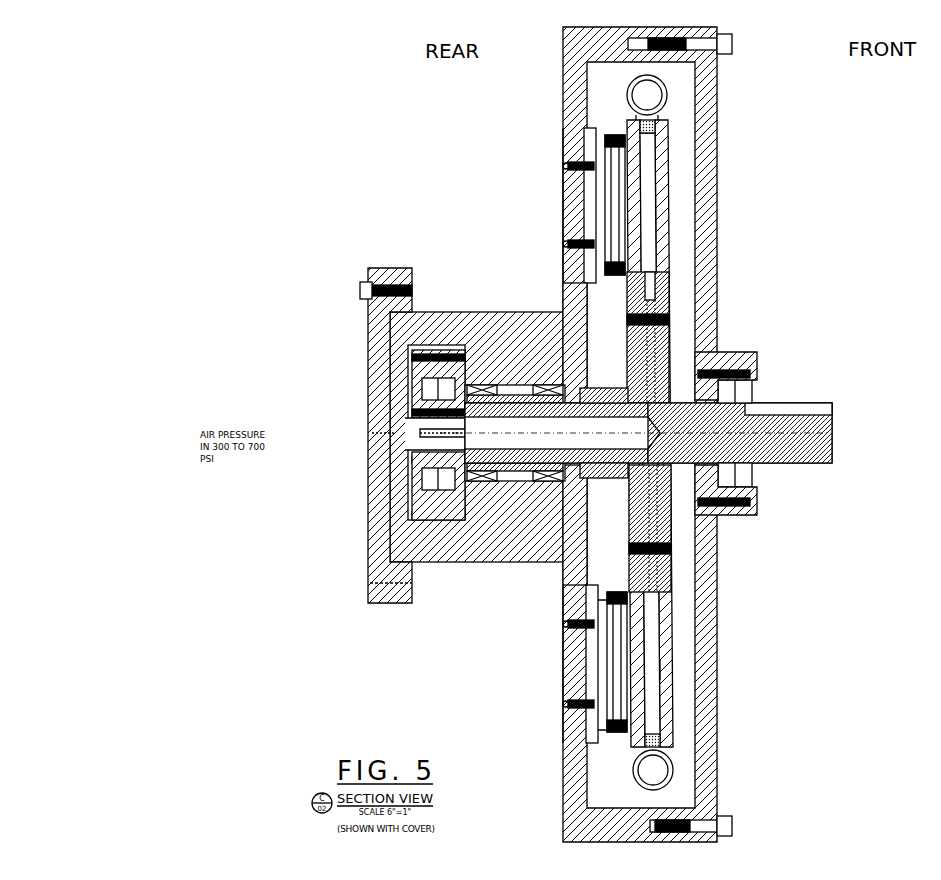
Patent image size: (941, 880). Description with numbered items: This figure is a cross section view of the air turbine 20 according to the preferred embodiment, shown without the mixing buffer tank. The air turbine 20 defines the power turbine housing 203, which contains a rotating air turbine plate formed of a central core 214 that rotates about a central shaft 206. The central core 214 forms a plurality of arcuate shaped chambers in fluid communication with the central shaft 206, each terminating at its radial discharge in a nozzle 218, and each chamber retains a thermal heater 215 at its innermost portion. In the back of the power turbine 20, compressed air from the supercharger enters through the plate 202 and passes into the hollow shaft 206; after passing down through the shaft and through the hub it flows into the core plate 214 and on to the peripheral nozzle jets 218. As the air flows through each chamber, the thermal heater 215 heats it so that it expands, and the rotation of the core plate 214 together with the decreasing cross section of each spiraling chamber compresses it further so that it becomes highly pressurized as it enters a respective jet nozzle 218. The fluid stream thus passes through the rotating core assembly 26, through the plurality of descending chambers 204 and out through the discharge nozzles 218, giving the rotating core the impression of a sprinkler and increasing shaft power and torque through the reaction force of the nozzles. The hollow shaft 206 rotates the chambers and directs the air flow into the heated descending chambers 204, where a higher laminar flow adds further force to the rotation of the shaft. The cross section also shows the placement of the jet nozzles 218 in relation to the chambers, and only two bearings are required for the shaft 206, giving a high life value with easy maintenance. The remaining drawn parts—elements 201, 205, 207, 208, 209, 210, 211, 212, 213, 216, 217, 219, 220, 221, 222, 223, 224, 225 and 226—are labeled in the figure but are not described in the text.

The air turbine 20 is at (185, 257).
The rotating core assembly 26 is at (688, 671).
The housing body 201 is at (440, 312).
The plate 202 is at (398, 270).
The power turbine housing 203 is at (567, 153).
The descending chambers 204 is at (715, 252).
The disc plate 205 is at (628, 285).
The central shaft 206 is at (748, 388).
The piston 207 is at (420, 398).
The piston seal 208 is at (412, 482).
The air passage 209 is at (406, 440).
The disc bolt 210 is at (632, 612).
The reaction plate 211 is at (588, 135).
The plate bolt 212 is at (575, 166).
The brake disc 213 is at (668, 148).
The central core 214 is at (650, 188).
The thermal heater 215 is at (708, 158).
The housing section 216 is at (567, 355).
The pressure ring 217 is at (618, 200).
The nozzle 218 is at (650, 95).
The hub 219 is at (670, 318).
The cover bolt 220 is at (735, 38).
The flange bolt 221 is at (320, 230).
The flange washer 222 is at (334, 228).
The lock washer 223 is at (551, 152).
The flange nut 224 is at (360, 290).
The bearing retainer 225 is at (608, 390).
The bearing 226 is at (405, 500).